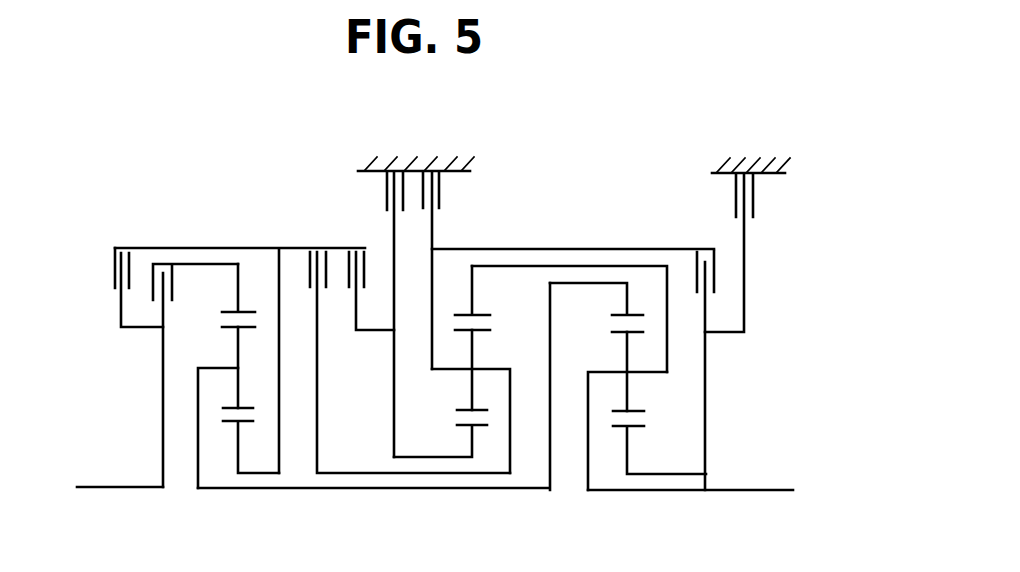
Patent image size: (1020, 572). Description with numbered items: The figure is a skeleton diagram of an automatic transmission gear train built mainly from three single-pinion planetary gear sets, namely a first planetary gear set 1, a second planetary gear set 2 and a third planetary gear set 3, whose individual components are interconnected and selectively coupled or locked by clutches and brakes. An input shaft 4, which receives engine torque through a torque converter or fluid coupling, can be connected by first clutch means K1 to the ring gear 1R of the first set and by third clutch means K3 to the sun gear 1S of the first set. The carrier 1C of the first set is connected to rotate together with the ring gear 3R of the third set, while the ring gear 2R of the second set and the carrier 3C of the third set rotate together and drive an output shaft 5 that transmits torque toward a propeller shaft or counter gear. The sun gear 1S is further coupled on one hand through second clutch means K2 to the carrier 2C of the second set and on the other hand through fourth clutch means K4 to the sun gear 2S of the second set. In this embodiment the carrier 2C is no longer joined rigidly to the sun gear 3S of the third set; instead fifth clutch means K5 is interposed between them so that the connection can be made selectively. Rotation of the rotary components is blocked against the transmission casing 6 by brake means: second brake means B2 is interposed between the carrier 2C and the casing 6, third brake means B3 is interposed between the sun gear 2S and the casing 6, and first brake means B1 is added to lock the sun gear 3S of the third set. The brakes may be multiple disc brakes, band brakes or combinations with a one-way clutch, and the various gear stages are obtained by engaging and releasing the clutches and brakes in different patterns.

The first planetary gear set 1 is at (229, 457).
The second planetary gear set 2 is at (464, 461).
The third planetary gear set 3 is at (613, 462).
The input shaft 4 is at (125, 487).
The output shaft 5 is at (749, 490).
The transmission casing 6 is at (459, 163).
The first clutch means K1 is at (195, 375).
The second clutch means K2 is at (405, 348).
The third clutch means K3 is at (135, 272).
The fourth clutch means K4 is at (370, 277).
The fifth clutch means K5 is at (702, 358).
The first brake means B1 is at (734, 232).
The second brake means B2 is at (439, 250).
The third brake means B3 is at (389, 294).
The ring gear of the first planetary gear set 1R is at (240, 312).
The carrier of the first planetary gear set 1C is at (223, 368).
The sun gear of the first planetary gear set 1S is at (243, 423).
The ring gear of the second planetary gear set 2R is at (481, 315).
The carrier of the second planetary gear set 2C is at (485, 369).
The sun gear of the second planetary gear set 2S is at (466, 427).
The ring gear of the third planetary gear set 3R is at (621, 315).
The carrier of the third planetary gear set 3C is at (612, 372).
The sun gear of the third planetary gear set 3S is at (632, 429).